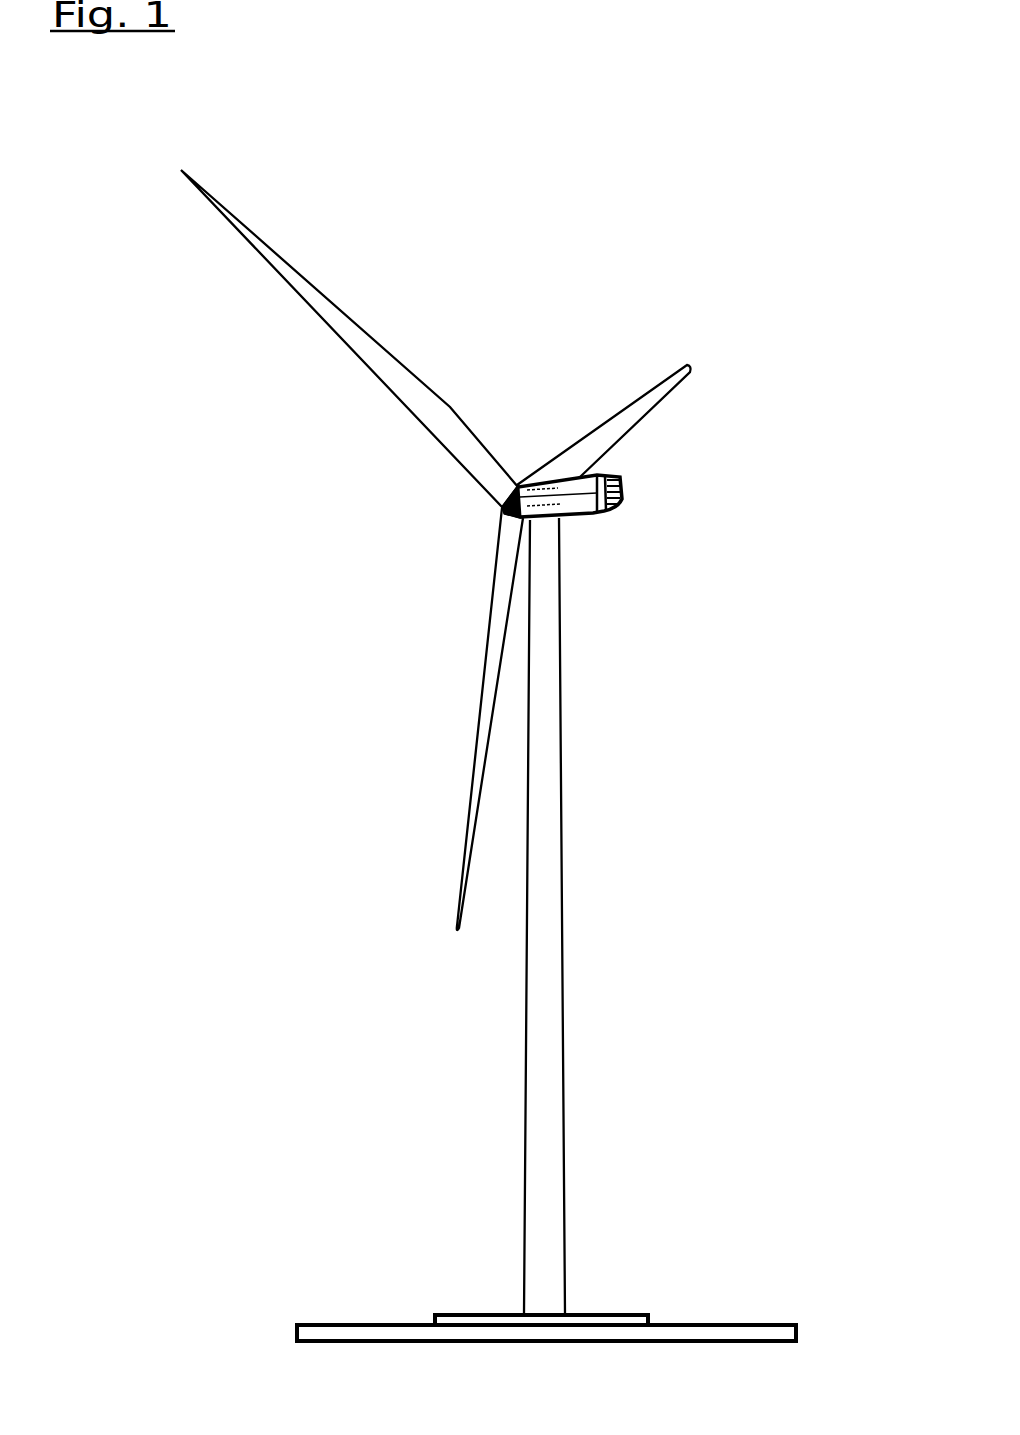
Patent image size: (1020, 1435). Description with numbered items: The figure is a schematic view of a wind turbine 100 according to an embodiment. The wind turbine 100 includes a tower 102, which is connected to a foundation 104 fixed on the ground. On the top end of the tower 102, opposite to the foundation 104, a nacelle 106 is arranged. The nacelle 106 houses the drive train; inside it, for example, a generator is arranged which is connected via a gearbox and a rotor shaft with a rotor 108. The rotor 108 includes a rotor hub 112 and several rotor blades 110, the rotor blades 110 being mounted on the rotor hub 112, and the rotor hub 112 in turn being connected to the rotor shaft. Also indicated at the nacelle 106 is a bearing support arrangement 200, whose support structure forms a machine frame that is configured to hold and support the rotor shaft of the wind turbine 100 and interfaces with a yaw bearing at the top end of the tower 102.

The wind turbine 100 is at (655, 796).
The tower 102 is at (542, 1010).
The foundation 104 is at (655, 1332).
The nacelle 106 is at (585, 520).
The rotor 108 is at (523, 416).
The rotor blades 110 is at (378, 377).
The rotor hub 112 is at (497, 515).
The bearing support arrangement 200 is at (552, 480).